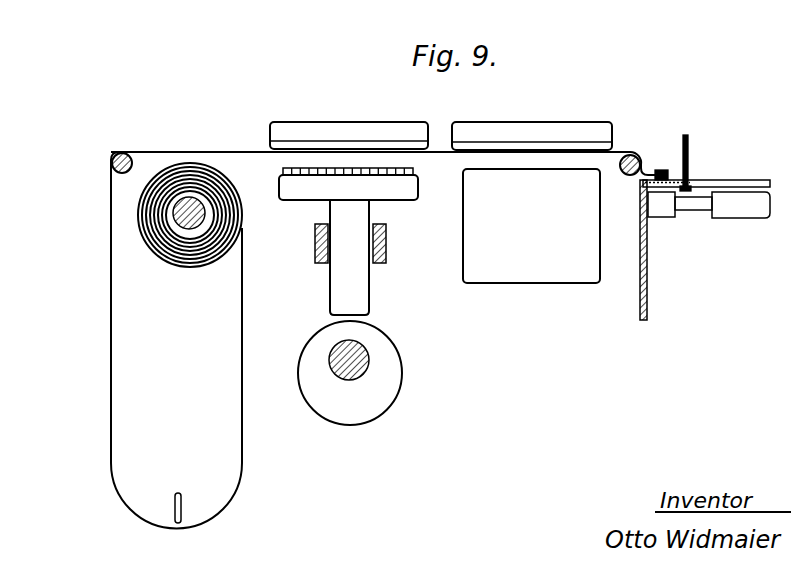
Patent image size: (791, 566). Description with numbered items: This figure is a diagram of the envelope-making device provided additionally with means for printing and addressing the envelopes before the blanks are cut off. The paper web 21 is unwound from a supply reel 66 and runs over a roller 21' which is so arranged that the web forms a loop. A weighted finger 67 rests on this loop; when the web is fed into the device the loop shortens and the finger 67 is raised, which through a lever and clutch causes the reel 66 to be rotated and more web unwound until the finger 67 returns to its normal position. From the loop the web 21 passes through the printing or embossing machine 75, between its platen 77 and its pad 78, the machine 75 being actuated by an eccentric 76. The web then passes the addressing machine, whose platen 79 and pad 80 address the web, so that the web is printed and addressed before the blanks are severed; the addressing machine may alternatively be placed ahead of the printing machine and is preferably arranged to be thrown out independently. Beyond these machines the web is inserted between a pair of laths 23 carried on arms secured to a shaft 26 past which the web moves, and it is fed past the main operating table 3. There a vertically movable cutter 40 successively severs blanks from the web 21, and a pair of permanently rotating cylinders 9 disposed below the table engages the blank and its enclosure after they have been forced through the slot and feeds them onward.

The web 21 is at (370, 133).
The roller 21' is at (132, 146).
The reel 66 is at (197, 252).
The weighted finger 67 is at (180, 508).
The pad 78 is at (333, 121).
The pad 80 is at (532, 116).
The platen 77 is at (311, 176).
The printing or embossing machine 75 is at (392, 193).
The eccentric 76 is at (385, 387).
The platen 79 is at (522, 272).
The shaft 26 is at (634, 156).
The laths 23 is at (663, 170).
The cutter 40 is at (690, 147).
The main operating table 3 is at (750, 180).
The cylinders 9 is at (745, 205).